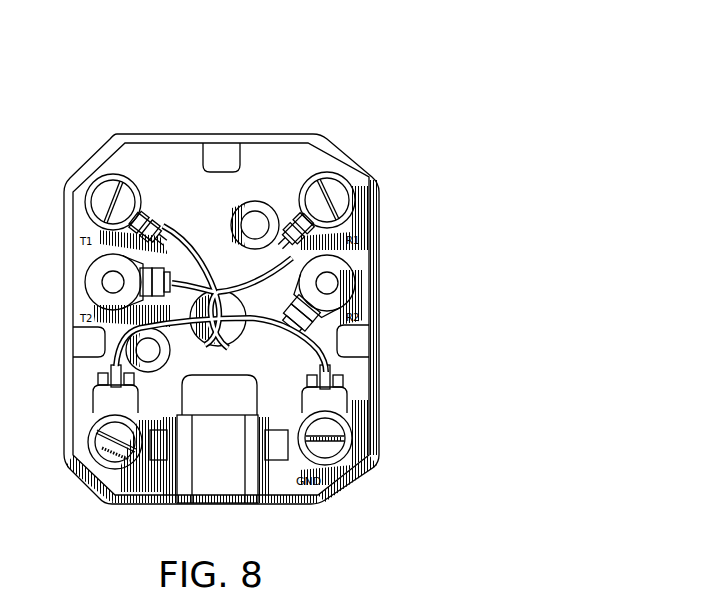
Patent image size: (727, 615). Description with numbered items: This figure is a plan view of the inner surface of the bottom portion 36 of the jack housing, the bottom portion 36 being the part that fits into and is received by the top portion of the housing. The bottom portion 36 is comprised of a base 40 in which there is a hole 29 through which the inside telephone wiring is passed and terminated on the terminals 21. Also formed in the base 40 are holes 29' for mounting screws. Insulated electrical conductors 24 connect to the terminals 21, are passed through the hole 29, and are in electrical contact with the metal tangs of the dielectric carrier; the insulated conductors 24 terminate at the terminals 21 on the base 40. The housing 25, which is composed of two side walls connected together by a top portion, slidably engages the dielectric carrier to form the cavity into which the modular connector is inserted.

The bottom portion 36 is at (382, 132).
The base 40 is at (176, 179).
The terminals 21 is at (100, 203).
The insulated electrical conductors 24 is at (195, 259).
The hole 29 is at (226, 332).
The mounting screw holes 29' is at (209, 272).
The housing 25 is at (238, 467).